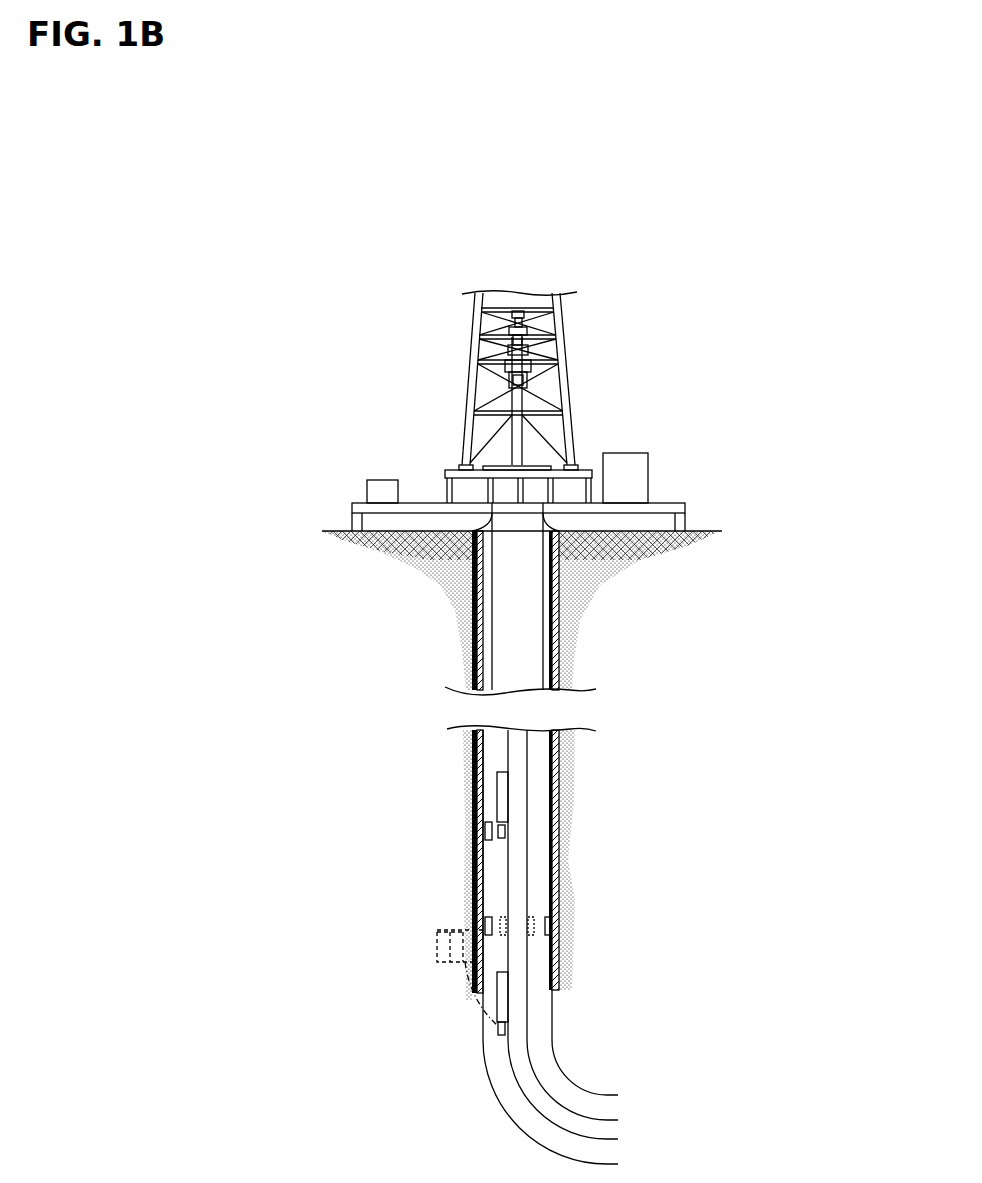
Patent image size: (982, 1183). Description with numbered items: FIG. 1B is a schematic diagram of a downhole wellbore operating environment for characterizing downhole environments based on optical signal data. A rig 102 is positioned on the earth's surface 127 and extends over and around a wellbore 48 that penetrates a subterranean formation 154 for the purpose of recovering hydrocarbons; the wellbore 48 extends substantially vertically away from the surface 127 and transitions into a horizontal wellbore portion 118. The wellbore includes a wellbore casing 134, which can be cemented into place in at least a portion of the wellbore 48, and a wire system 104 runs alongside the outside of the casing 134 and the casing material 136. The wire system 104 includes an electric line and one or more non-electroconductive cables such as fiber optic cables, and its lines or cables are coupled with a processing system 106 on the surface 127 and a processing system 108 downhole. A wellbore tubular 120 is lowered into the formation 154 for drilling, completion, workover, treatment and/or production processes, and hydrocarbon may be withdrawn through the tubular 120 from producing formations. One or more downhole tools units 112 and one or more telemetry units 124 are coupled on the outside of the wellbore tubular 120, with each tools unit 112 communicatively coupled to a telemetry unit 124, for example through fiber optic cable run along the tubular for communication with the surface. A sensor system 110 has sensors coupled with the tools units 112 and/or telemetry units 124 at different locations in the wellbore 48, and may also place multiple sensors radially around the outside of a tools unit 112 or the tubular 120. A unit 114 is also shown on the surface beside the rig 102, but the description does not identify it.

The rig 102 is at (567, 354).
The processing system 106 is at (378, 480).
The surface control unit 114 is at (650, 467).
The earth's surface 127 is at (706, 528).
The subterranean formation 154 is at (352, 621).
The wellbore casing 134 is at (543, 612).
The casing material 136 is at (565, 671).
The wire system 104 is at (472, 662).
The wellbore 48 is at (543, 772).
The downhole tools unit 112 is at (497, 798).
The wellbore tubular 120 is at (527, 828).
The sensor system 110 is at (485, 830).
The telemetry unit 124 is at (505, 838).
The processing system 108 is at (438, 960).
The horizontal wellbore portion 118 is at (610, 1163).